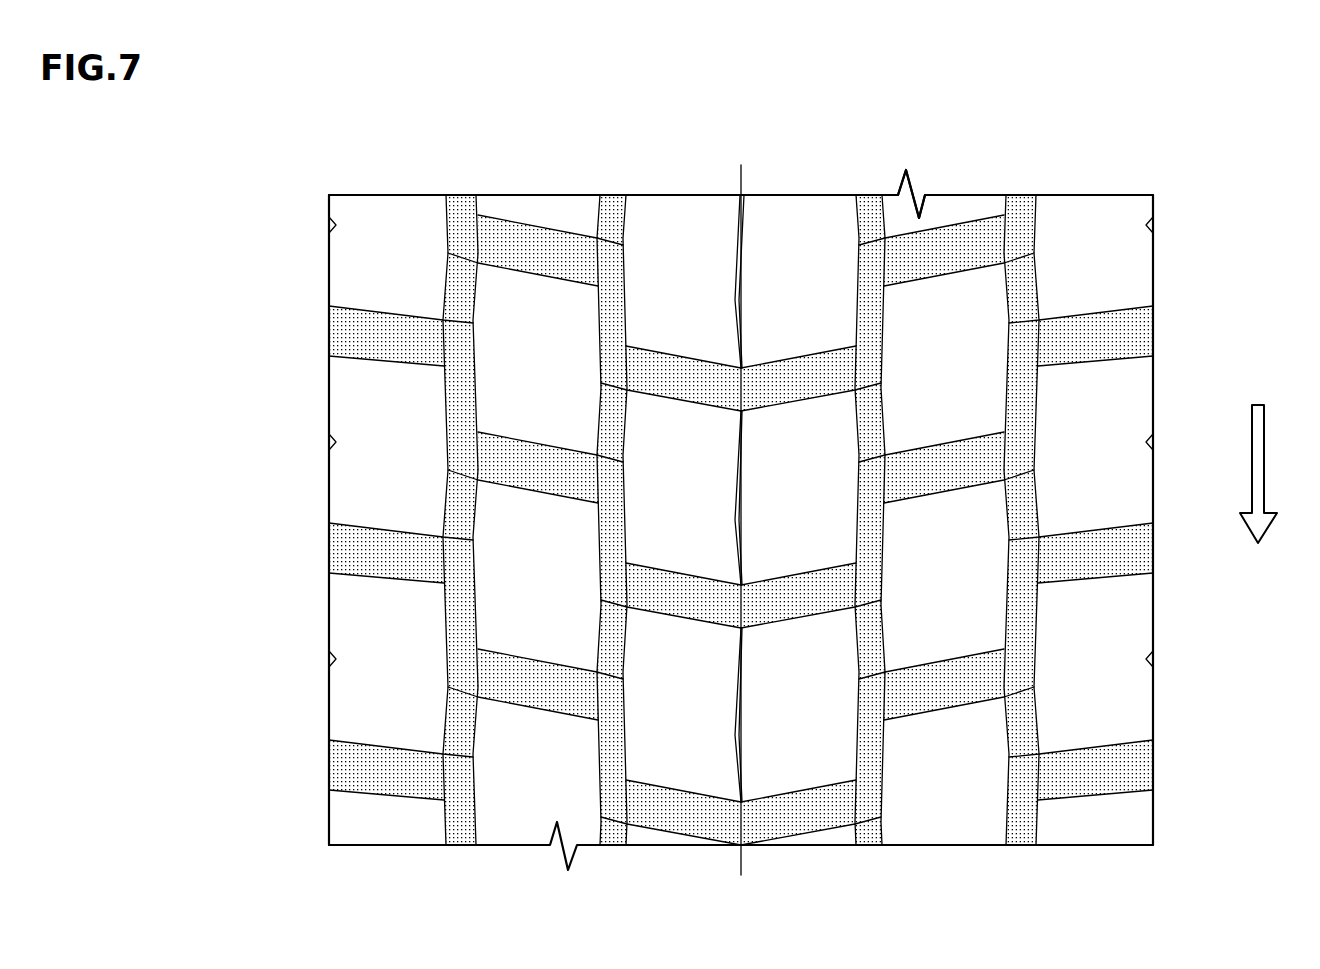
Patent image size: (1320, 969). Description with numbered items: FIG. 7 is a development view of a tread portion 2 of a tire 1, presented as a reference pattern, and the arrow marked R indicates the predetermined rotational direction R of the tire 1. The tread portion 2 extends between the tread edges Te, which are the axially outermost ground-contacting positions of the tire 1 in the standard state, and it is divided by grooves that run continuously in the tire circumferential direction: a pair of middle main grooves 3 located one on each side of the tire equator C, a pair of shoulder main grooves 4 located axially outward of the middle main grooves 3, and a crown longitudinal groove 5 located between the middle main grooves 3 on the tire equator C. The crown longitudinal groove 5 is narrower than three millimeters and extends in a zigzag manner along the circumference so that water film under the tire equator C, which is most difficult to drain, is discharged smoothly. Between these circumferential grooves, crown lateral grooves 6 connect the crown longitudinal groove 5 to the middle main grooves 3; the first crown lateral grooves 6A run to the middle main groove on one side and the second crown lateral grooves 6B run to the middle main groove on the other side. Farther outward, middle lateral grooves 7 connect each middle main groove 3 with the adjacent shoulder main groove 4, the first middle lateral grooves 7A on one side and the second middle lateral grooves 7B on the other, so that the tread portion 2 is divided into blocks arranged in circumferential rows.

The tire 1 is at (1250, 132).
The tread portion 2 is at (1170, 195).
The middle main grooves 3 is at (612, 230).
The shoulder main grooves 4 is at (462, 230).
The crown longitudinal groove 5 is at (742, 247).
The crown lateral grooves 6 is at (741, 635).
The first crown lateral grooves 6A is at (795, 807).
The second crown lateral grooves 6B is at (687, 807).
The middle lateral grooves 7 is at (741, 570).
The first middle lateral grooves 7A is at (951, 683).
The second middle lateral grooves 7B is at (531, 683).
The tire equator C is at (738, 505).
The tread edges Te is at (329, 265).
The rotational direction R is at (1258, 492).